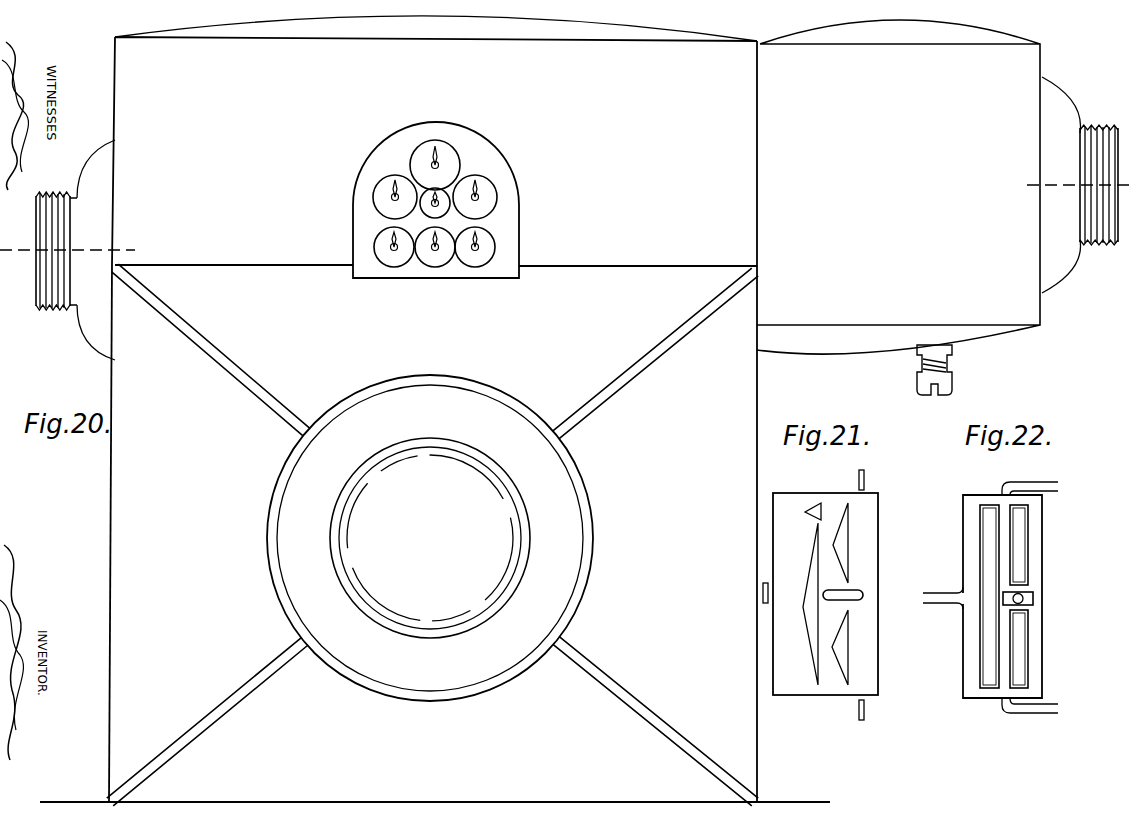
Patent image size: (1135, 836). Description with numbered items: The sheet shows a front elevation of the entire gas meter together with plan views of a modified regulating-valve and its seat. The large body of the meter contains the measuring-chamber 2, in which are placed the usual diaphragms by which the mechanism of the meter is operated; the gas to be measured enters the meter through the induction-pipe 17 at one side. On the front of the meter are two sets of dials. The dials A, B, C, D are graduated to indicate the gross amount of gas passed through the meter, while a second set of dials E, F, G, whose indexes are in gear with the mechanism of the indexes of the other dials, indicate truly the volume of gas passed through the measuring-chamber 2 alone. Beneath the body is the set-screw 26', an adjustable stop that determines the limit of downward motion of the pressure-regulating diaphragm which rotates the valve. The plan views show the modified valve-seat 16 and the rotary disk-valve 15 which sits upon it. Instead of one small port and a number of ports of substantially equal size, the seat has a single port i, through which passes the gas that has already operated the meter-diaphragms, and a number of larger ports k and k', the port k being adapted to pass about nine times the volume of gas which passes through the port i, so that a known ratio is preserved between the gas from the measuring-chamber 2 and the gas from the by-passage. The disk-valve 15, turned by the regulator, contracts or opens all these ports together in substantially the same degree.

In FIG. 20, the measuring-chamber 2 is at (432, 535).
In FIG. 20, the induction-pipe 17 is at (36, 279).
In FIG. 20, the set-screw 26' is at (952, 370).
In FIG. 20, the dial A is at (385, 210).
In FIG. 20, the dial B is at (428, 163).
In FIG. 20, the dial C is at (483, 186).
In FIG. 20, the dial D is at (439, 210).
In FIG. 20, the dial E is at (385, 254).
In FIG. 20, the dial F is at (432, 265).
In FIG. 20, the dial G is at (479, 263).
In FIG. 21, the port i is at (817, 504).
In FIG. 21, the valve-seat 16 is at (820, 595).
In FIG. 21, the port k is at (796, 625).
In FIG. 21, the port k' is at (870, 594).
In FIG. 22, the rotary disk-valve 15 is at (1036, 518).